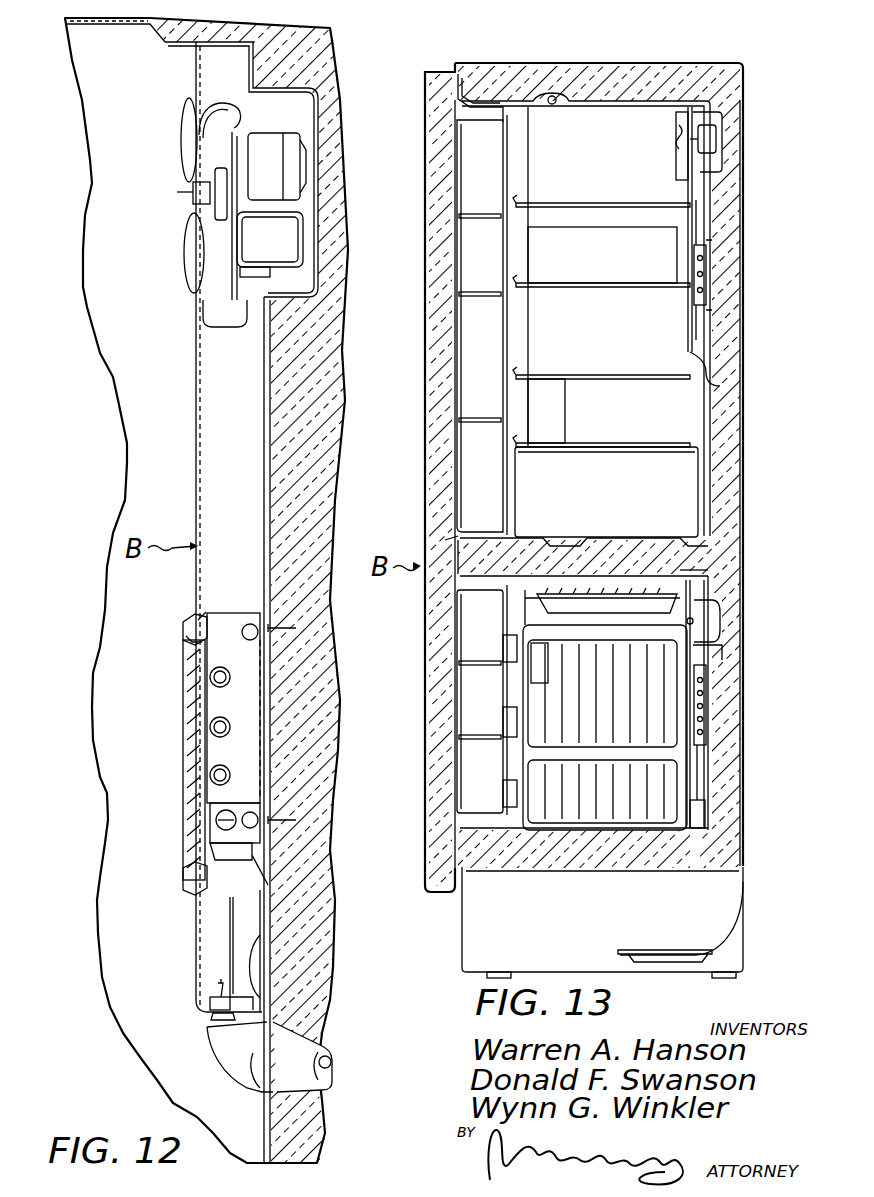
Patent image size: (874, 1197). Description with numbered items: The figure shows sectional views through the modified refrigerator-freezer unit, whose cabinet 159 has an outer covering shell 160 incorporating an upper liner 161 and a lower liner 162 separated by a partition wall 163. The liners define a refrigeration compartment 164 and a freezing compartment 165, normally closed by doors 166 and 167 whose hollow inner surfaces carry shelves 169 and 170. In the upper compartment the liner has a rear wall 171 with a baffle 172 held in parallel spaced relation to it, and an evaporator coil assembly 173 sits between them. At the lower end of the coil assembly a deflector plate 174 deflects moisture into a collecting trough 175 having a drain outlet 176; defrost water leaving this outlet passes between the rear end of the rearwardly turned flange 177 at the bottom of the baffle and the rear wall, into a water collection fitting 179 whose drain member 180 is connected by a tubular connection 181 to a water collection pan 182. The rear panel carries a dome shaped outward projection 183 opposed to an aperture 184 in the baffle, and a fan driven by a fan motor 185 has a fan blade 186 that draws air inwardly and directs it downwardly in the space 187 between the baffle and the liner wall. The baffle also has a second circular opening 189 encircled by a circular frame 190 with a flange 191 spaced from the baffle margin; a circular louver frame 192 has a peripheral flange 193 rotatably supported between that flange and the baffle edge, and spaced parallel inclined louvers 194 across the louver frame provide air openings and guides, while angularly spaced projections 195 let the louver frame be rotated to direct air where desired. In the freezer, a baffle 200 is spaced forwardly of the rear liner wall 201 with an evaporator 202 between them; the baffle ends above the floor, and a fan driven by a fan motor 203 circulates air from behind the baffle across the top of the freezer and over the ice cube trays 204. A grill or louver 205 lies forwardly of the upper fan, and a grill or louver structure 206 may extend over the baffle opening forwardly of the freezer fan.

In FIG. 13, the cabinet 159 is at (614, 61).
In FIG. 13, the outer covering shell 160 is at (742, 252).
In FIG. 12, the upper liner 161 is at (265, 62).
In FIG. 13, the upper liner 161 is at (638, 105).
In FIG. 13, the lower liner 162 is at (716, 562).
In FIG. 13, the partition wall 163 is at (456, 541).
In FIG. 13, the refrigeration compartment 164 is at (636, 333).
In FIG. 13, the freezing compartment 165 is at (560, 628).
In FIG. 13, the door 166 is at (432, 343).
In FIG. 13, the door 167 is at (430, 735).
In FIG. 13, the shelves 169 is at (468, 295).
In FIG. 13, the shelves 170 is at (468, 735).
In FIG. 12, the rear wall 171 is at (267, 483).
In FIG. 13, the rear wall 171 is at (712, 418).
In FIG. 12, the baffle 172 is at (196, 478).
In FIG. 12, the evaporator coil assembly 173 is at (228, 702).
In FIG. 13, the evaporator coil assembly 173 is at (710, 290).
In FIG. 12, the deflector plate 174 is at (213, 903).
In FIG. 12, the collecting trough 175 is at (228, 960).
In FIG. 12, the drain outlet 176 is at (213, 997).
In FIG. 12, the rearwardly turned flange 177 is at (212, 1022).
In FIG. 12, the water collection fitting 179 is at (230, 1057).
In FIG. 12, the drain member 180 is at (312, 1055).
In FIG. 13, the tubular connection 181 is at (745, 462).
In FIG. 13, the water collection pan 182 is at (662, 956).
In FIG. 12, the dome shaped outward projection 183 is at (310, 125).
In FIG. 13, the dome shaped outward projection 183 is at (725, 126).
In FIG. 12, the aperture 184 is at (193, 303).
In FIG. 12, the fan motor 185 is at (292, 162).
In FIG. 12, the fan blade 186 is at (185, 272).
In FIG. 12, the space 187 is at (232, 405).
In FIG. 12, the second circular opening 189 is at (195, 894).
In FIG. 12, the circular frame 190 is at (195, 617).
In FIG. 12, the flange 191 is at (188, 636).
In FIG. 12, the circular louver frame 192 is at (190, 648).
In FIG. 12, the peripheral flange 193 is at (205, 618).
In FIG. 12, the louvers 194 is at (192, 780).
In FIG. 12, the projections 195 is at (185, 846).
In FIG. 13, the baffle 200 is at (700, 660).
In FIG. 13, the rear liner wall 201 is at (710, 675).
In FIG. 13, the evaporator 202 is at (708, 706).
In FIG. 13, the fan motor 203 is at (718, 610).
In FIG. 13, the ice cube trays 204 is at (640, 590).
In FIG. 13, the grill or louver 205 is at (674, 135).
In FIG. 13, the grill or louver structure 206 is at (680, 570).